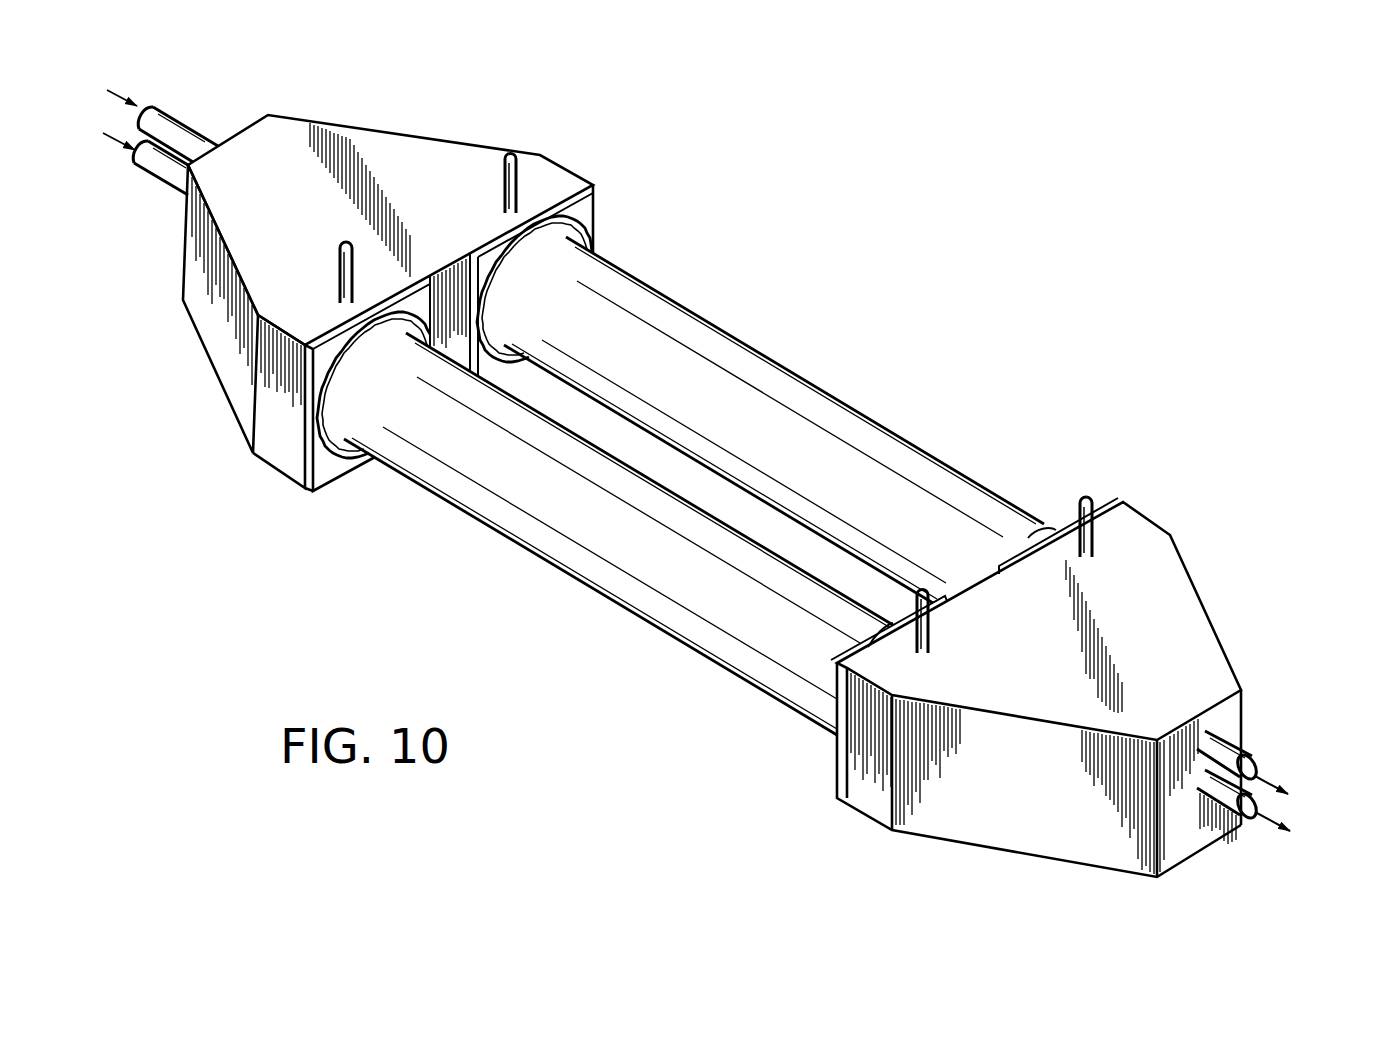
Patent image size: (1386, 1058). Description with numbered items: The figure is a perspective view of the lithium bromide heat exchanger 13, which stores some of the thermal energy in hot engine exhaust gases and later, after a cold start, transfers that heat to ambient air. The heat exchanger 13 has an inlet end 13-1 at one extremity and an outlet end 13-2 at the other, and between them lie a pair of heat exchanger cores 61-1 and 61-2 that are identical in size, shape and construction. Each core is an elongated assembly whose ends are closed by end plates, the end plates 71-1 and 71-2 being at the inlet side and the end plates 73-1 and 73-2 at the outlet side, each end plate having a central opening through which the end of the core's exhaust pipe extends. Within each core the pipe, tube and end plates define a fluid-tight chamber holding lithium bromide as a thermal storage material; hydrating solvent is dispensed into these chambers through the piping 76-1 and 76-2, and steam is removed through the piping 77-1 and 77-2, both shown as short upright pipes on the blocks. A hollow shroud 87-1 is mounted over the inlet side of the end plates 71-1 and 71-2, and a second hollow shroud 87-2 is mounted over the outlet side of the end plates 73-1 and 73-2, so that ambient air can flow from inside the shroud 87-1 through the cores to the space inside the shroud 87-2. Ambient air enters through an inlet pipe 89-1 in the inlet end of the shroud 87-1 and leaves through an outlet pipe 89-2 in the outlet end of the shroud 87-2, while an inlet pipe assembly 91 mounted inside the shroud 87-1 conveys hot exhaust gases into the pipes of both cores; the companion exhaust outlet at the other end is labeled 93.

The LiBr heat exchanger 13 is at (822, 212).
The inlet end 13-1 is at (363, 124).
The outlet end 13-2 is at (1040, 872).
The heat exchanger core 61-1 is at (562, 572).
The heat exchanger core 61-2 is at (778, 357).
The end plate 71-1 is at (316, 480).
The end plate 71-2 is at (578, 209).
The end plate 73-1 is at (836, 740).
The end plate 73-2 is at (1118, 504).
The piping 76-1 is at (935, 640).
The piping 76-2 is at (1090, 556).
The piping 77-1 is at (333, 270).
The piping 77-2 is at (498, 184).
The shroud 87-1 is at (228, 366).
The shroud 87-2 is at (1207, 656).
The inlet pipe 89-1 is at (165, 116).
The outlet pipe 89-2 is at (1252, 766).
The inlet pipe assembly 91 is at (144, 178).
The outlet tube 93 is at (1212, 812).